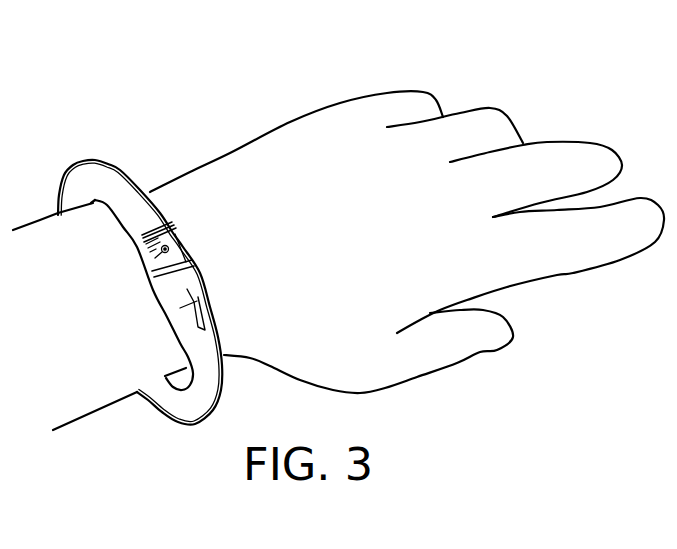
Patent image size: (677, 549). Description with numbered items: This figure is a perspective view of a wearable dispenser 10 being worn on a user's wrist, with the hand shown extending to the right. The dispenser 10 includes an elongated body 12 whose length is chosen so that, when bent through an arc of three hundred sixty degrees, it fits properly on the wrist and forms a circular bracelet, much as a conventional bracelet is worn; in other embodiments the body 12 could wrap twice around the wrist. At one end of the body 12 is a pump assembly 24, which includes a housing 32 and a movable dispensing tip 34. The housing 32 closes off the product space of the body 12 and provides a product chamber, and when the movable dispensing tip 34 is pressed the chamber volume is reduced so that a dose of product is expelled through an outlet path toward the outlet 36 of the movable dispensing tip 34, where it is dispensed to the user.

The wearable dispenser 10 is at (140, 142).
The body 12 is at (83, 160).
The pump assembly 24 is at (197, 250).
The housing 32 is at (207, 307).
The movable dispensing tip 34 is at (180, 217).
The outlet 36 is at (153, 268).